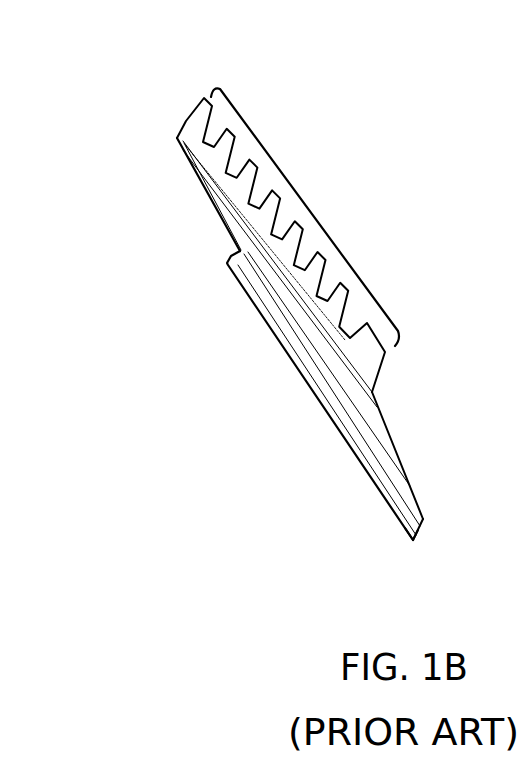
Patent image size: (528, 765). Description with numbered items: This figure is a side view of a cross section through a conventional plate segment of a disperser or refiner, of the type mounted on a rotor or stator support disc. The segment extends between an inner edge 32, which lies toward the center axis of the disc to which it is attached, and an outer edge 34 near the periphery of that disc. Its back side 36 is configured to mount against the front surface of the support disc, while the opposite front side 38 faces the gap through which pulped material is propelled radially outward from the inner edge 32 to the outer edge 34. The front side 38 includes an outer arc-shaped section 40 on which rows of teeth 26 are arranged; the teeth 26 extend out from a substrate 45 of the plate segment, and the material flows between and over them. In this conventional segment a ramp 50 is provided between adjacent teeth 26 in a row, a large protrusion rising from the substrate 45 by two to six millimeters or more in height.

The teeth 26 is at (233, 112).
The inner edge 32 is at (416, 543).
The outer edge 34 is at (183, 126).
The back side 36 is at (318, 398).
The front side 38 is at (420, 422).
The outer arc-shaped section 40 is at (304, 203).
The substrate 45 is at (416, 502).
The ramp 50 is at (290, 261).